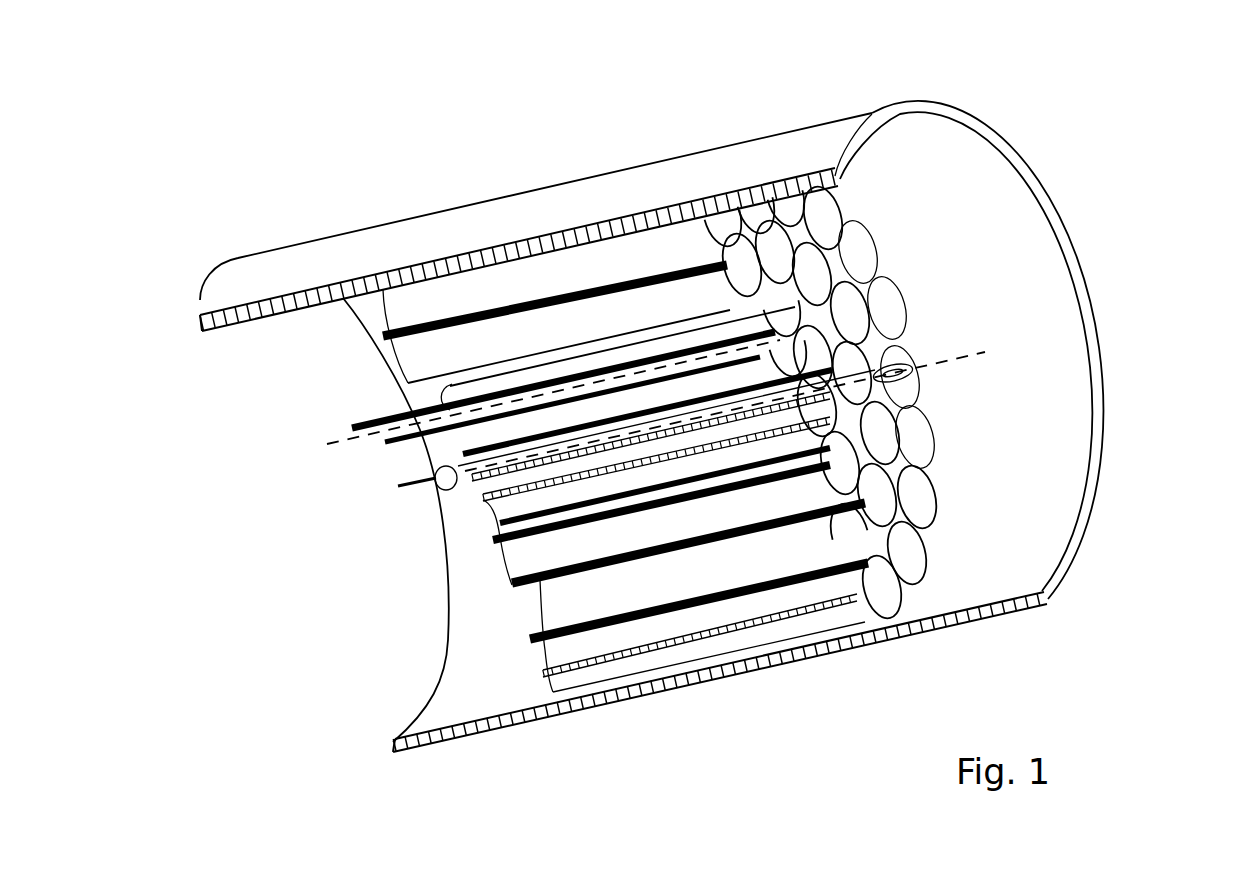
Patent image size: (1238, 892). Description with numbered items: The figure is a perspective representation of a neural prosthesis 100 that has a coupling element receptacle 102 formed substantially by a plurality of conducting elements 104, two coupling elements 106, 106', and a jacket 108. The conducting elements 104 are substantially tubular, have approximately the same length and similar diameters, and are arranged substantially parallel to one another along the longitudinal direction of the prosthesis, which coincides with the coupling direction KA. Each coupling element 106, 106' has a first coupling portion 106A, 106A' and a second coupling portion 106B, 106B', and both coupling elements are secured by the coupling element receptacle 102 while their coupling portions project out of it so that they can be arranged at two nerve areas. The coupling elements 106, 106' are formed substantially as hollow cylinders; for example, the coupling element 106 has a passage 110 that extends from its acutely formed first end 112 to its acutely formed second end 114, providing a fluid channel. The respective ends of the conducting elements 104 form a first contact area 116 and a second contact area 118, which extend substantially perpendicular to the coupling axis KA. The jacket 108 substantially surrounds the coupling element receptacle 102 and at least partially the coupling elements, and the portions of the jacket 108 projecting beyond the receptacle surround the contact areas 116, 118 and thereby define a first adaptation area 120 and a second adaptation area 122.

The neural prosthesis 100 is at (196, 712).
The coupling element receptacle 102 is at (712, 645).
The conducting elements 104 is at (918, 445).
The coupling element 106 is at (441, 373).
The first coupling portion 106A is at (541, 358).
The first coupling portion 106A' is at (635, 467).
The second coupling portion 106B is at (913, 275).
The second coupling portion 106B' is at (949, 353).
The coupling element 106' is at (383, 521).
The jacket 108 is at (1100, 447).
The passage 110 is at (377, 438).
The first end 112 is at (523, 384).
The second end 114 is at (835, 325).
The first contact area 116 is at (521, 617).
The second contact area 118 is at (940, 403).
The first adaptation area 120 is at (419, 679).
The second adaptation area 122 is at (1120, 372).
The coupling direction KA is at (1000, 348).